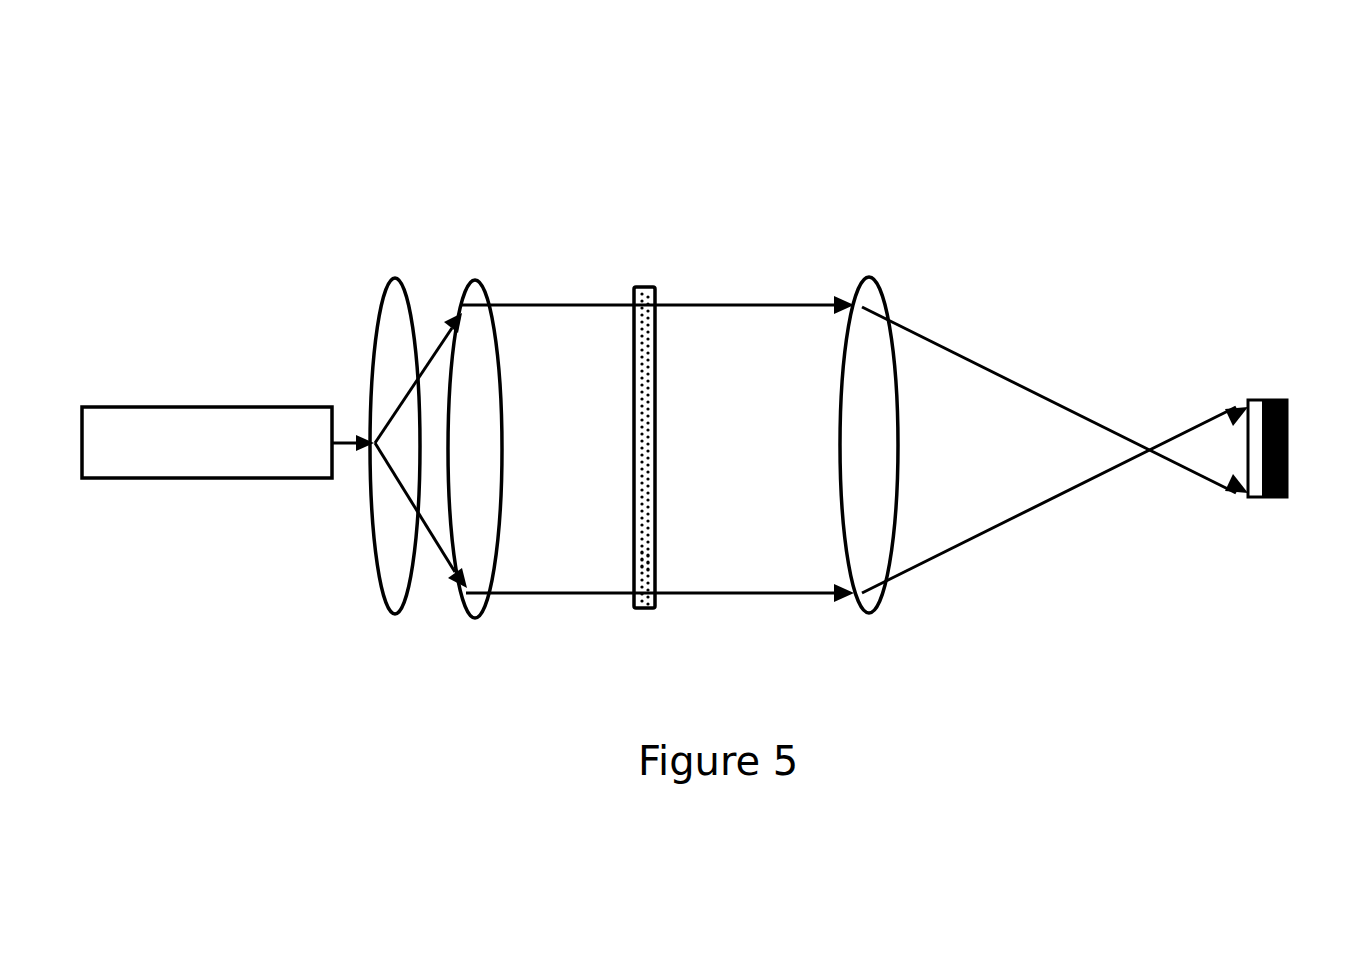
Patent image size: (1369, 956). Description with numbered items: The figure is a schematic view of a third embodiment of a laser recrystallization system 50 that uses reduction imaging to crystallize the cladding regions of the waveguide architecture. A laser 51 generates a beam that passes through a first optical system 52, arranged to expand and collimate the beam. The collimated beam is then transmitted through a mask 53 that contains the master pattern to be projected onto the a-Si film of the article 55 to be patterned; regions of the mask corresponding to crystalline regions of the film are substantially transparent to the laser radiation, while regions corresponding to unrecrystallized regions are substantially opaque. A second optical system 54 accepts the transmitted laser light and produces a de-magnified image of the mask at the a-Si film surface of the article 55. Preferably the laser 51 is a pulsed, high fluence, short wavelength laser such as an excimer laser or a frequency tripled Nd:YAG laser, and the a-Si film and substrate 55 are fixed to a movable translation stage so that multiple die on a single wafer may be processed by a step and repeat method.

The laser recrystallization system 50 is at (1042, 112).
The laser 51 is at (148, 407).
The first optical system 52 is at (363, 262).
The mask 53 is at (649, 287).
The second optical system 54 is at (868, 277).
The article 55 is at (1263, 400).